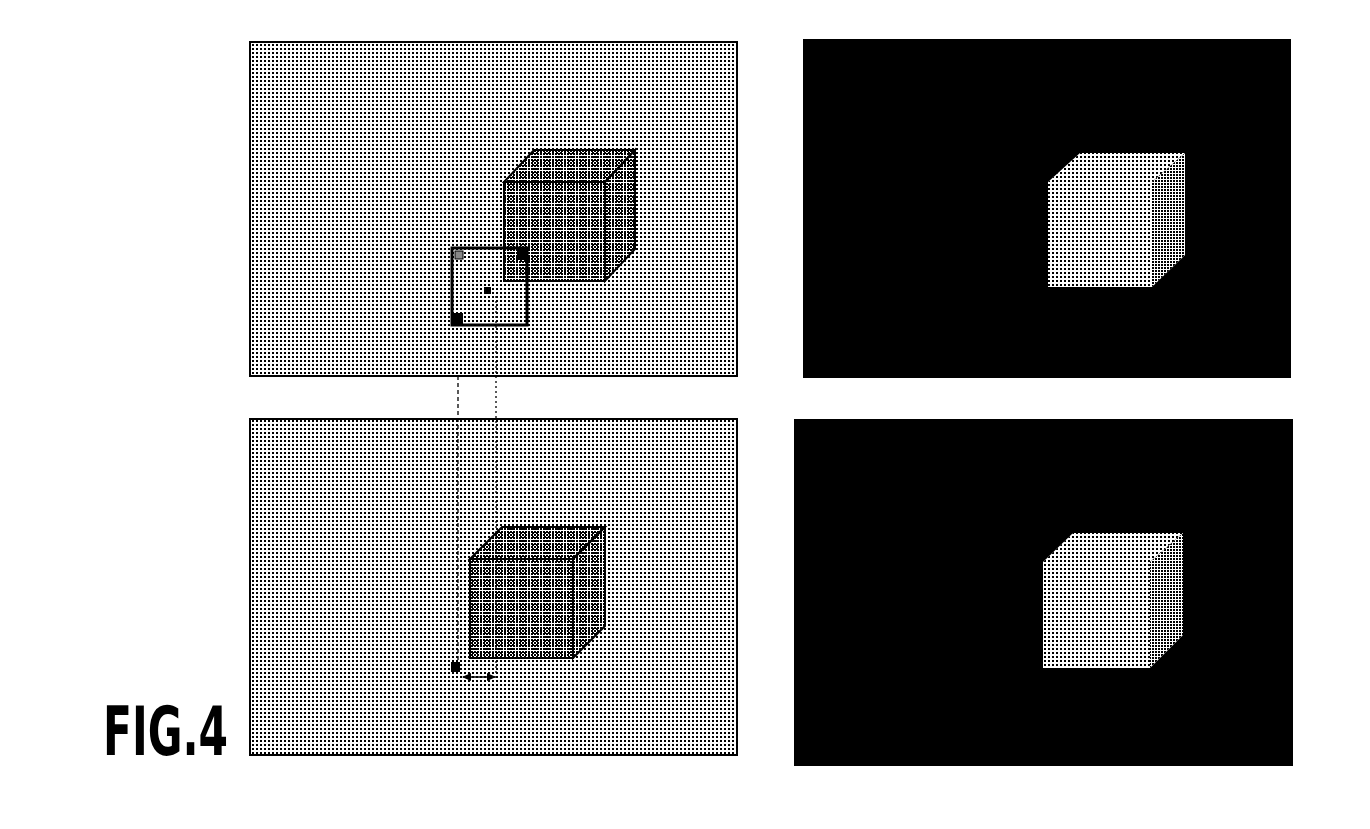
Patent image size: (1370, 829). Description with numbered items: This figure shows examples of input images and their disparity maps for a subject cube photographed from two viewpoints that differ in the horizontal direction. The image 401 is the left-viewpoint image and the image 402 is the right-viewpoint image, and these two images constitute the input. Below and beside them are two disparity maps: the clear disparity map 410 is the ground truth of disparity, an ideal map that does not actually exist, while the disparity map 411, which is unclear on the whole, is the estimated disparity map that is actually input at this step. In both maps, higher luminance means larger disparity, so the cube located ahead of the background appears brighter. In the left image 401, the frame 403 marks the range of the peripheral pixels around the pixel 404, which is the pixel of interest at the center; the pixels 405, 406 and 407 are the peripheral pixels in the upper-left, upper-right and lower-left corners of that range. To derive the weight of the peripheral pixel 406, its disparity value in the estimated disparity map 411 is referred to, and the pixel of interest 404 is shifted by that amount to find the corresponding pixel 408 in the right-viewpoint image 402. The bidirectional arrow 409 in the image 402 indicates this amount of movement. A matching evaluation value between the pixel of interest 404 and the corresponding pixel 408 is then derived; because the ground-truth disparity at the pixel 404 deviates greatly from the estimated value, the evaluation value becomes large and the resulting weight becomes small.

The image 401 is at (673, 41).
The image 402 is at (673, 418).
The frame 403 is at (527, 323).
The pixel 404 is at (490, 292).
The pixel 405 is at (458, 253).
The pixel 406 is at (522, 252).
The pixel 407 is at (456, 317).
The corresponding pixel 408 is at (455, 660).
The bidirectional arrow 409 is at (477, 682).
The disparity map 410 is at (1217, 40).
The disparity map 411 is at (1217, 419).